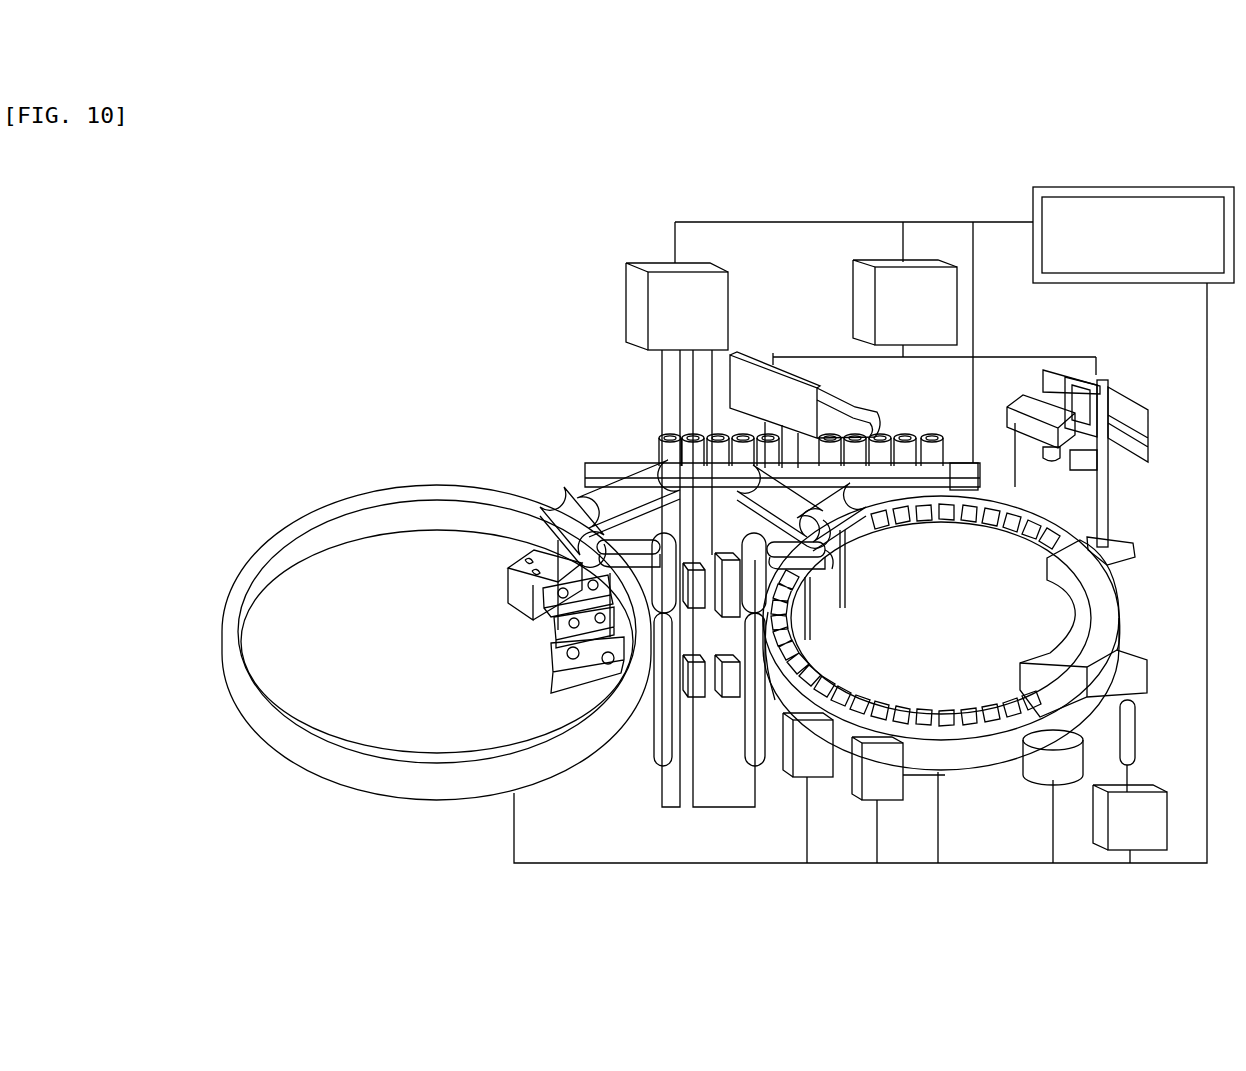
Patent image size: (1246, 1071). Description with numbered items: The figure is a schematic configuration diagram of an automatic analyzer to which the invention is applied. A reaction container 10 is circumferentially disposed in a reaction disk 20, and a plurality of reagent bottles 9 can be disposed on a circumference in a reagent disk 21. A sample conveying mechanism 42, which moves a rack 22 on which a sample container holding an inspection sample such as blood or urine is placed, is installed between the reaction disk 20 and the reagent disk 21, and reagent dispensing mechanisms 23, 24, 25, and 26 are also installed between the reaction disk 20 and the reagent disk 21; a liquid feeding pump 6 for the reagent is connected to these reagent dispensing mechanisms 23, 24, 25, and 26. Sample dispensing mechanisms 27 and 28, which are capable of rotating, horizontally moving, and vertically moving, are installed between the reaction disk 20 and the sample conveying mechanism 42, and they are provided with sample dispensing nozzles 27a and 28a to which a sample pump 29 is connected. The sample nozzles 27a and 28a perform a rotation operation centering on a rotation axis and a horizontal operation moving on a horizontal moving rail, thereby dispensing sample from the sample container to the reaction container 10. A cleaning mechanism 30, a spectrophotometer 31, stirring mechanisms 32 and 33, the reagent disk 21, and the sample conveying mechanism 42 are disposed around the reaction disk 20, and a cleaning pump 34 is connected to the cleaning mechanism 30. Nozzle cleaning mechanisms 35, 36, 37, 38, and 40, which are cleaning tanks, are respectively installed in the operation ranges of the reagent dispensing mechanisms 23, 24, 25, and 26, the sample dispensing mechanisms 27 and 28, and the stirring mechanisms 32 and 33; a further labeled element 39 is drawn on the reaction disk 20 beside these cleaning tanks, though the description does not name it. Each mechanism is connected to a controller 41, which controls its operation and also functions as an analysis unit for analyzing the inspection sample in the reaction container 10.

The liquid feeding pump 6 is at (672, 290).
The reagent bottle 9 is at (588, 687).
The reaction container 10 is at (935, 730).
The reaction disk 20 is at (941, 633).
The reagent disk 21 is at (357, 520).
The rack 22 is at (967, 473).
The reagent dispensing mechanism 23 is at (543, 612).
The reagent dispensing mechanism 24 is at (823, 600).
The reagent dispensing mechanism 25 is at (557, 498).
The reagent dispensing mechanism 26 is at (830, 563).
The sample dispensing mechanism 27 is at (829, 378).
The sample dispensing nozzle 27a is at (903, 453).
The sample dispensing mechanism 28 is at (1089, 467).
The sample dispensing nozzle 28a is at (1017, 457).
The sample pump 29 is at (905, 280).
The cleaning mechanism 30 is at (1087, 617).
The spectrophotometer 31 is at (1047, 765).
The stirring mechanism 32 is at (817, 750).
The stirring mechanism 33 is at (883, 783).
The cleaning pump 34 is at (1135, 828).
The nozzle cleaning mechanism 35 is at (688, 720).
The nozzle cleaning mechanism 36 is at (713, 703).
The nozzle cleaning mechanism 37 is at (577, 643).
The nozzle cleaning mechanism 38 is at (787, 653).
The cuvette slot 39 is at (913, 527).
The nozzle cleaning mechanism 40 is at (1030, 530).
The controller 41 is at (1103, 215).
The sample conveying mechanism 42 is at (608, 473).